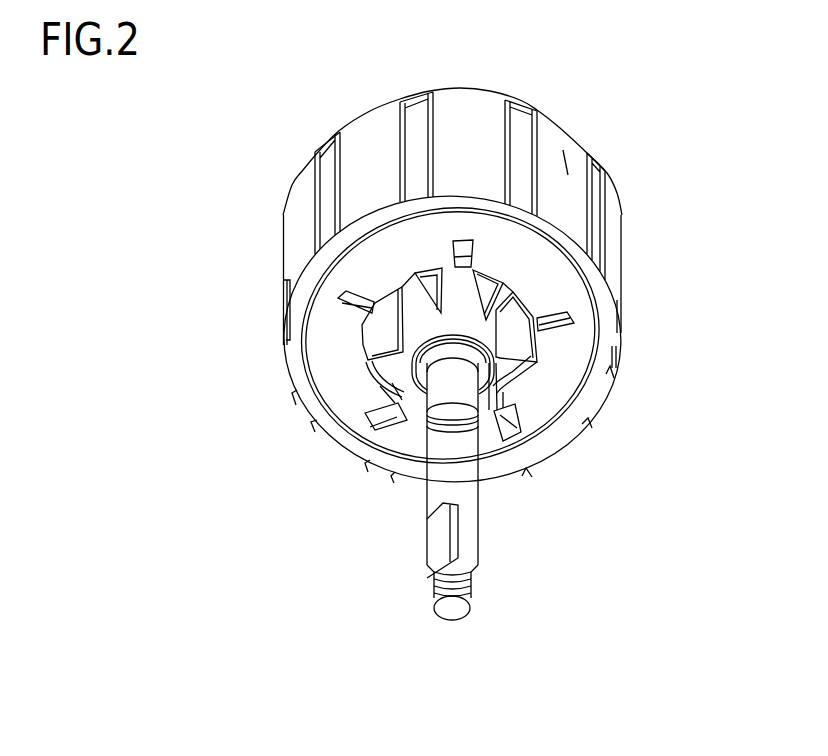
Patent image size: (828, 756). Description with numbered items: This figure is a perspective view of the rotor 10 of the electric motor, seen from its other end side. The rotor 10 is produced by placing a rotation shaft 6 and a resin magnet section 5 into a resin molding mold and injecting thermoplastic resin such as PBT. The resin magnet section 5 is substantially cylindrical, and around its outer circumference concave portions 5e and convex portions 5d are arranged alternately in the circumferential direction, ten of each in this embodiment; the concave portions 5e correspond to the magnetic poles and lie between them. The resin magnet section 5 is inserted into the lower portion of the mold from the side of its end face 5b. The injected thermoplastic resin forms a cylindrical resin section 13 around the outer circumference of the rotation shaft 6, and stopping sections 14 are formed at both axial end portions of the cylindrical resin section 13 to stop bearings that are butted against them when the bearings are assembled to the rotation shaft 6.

The rotor 10 is at (472, 76).
The resin magnet section 5 is at (560, 128).
The concave portions 5e is at (521, 127).
The convex portions 5d is at (567, 160).
The end face 5b is at (612, 331).
The cylindrical resin section 13 is at (480, 338).
The stopping sections 14 is at (478, 370).
The rotation shaft 6 is at (463, 490).